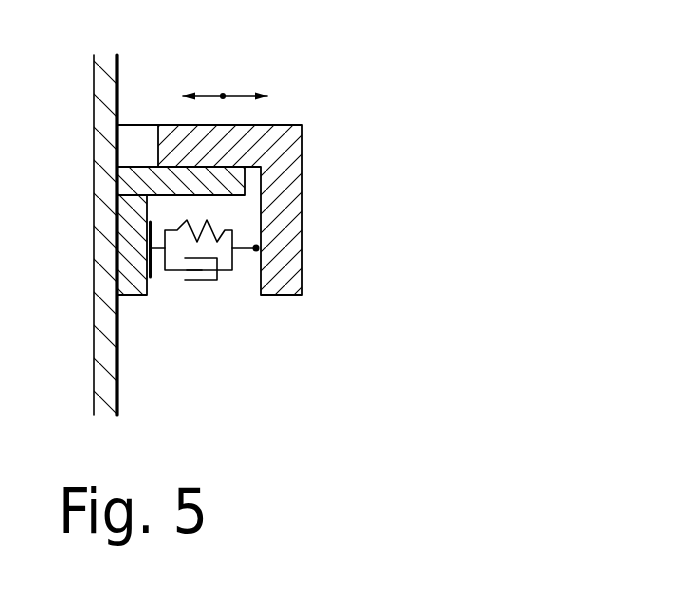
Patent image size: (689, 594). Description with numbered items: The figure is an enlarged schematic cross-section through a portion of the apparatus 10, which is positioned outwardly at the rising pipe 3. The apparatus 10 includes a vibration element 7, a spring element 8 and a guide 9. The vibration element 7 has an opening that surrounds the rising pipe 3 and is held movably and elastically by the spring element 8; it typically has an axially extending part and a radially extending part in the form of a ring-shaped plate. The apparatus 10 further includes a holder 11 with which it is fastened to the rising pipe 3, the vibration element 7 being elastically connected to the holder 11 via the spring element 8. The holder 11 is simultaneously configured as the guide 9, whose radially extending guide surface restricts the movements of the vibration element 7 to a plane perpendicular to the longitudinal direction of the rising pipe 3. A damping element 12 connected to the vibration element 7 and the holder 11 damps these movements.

The rising pipe 3 is at (117, 397).
The vibration element 7 is at (303, 202).
The spring element 8 is at (233, 233).
The guide 9 is at (208, 167).
The apparatus 10 is at (296, 89).
The holder 11 is at (142, 297).
The damping element 12 is at (207, 282).